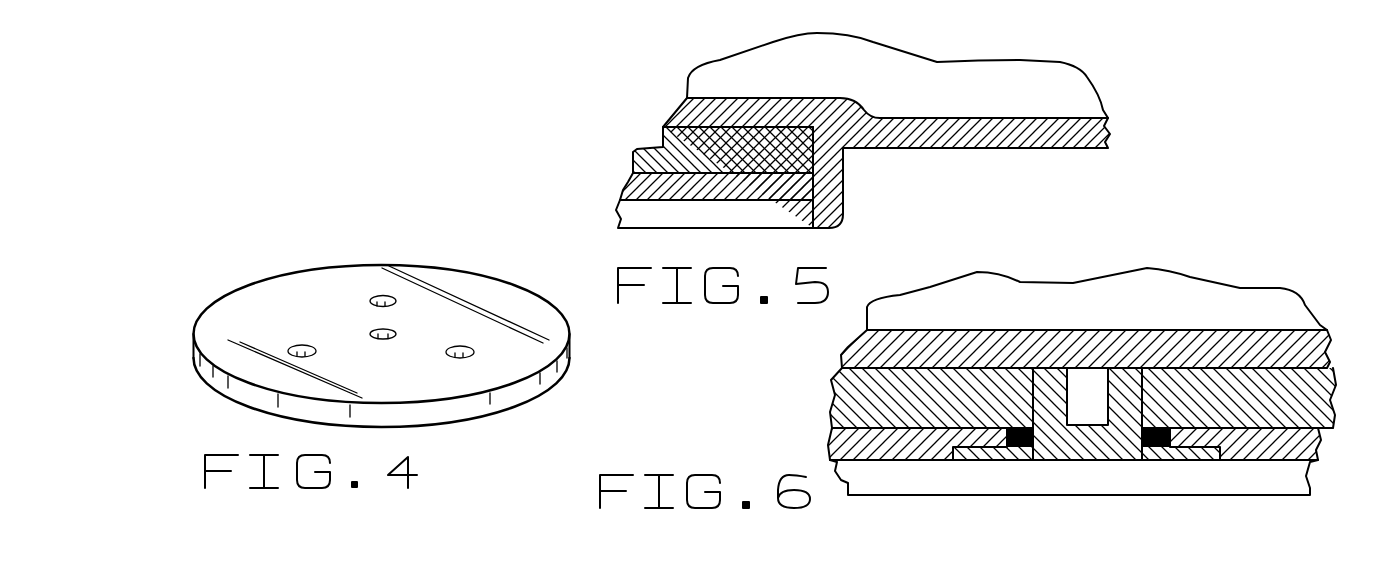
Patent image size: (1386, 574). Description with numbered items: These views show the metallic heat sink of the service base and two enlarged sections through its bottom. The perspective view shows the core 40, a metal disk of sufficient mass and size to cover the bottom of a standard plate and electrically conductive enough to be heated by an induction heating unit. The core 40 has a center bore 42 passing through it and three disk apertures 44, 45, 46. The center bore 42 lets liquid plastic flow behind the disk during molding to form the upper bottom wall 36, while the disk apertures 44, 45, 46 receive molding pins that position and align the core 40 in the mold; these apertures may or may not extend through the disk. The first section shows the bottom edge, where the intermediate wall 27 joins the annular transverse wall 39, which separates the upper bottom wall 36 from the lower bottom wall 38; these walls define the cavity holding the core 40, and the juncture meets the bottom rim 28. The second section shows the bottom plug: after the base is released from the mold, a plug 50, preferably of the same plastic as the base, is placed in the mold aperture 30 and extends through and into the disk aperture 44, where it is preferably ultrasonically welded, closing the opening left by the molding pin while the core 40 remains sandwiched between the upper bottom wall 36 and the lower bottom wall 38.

In FIG. 5, the intermediate wall 27 is at (983, 149).
In FIG. 5, the bottom rim 28 is at (840, 218).
In FIG. 6, the mold aperture 30 is at (925, 463).
In FIG. 5, the upper bottom wall 36 is at (697, 110).
In FIG. 6, the upper bottom wall 36 is at (1325, 332).
In FIG. 5, the lower bottom wall 38 is at (650, 190).
In FIG. 6, the lower bottom wall 38 is at (1313, 438).
In FIG. 5, the annular transverse wall 39 is at (836, 122).
In FIG. 4, the core 40 is at (331, 241).
In FIG. 5, the core 40 is at (677, 152).
In FIG. 6, the core 40 is at (1298, 397).
In FIG. 4, the center bore 42 is at (386, 334).
In FIG. 4, the disk aperture 44 is at (463, 346).
In FIG. 6, the disk aperture 44 is at (1046, 366).
In FIG. 4, the disk aperture 45 is at (382, 295).
In FIG. 4, the disk aperture 46 is at (302, 346).
In FIG. 6, the plug 50 is at (1152, 458).